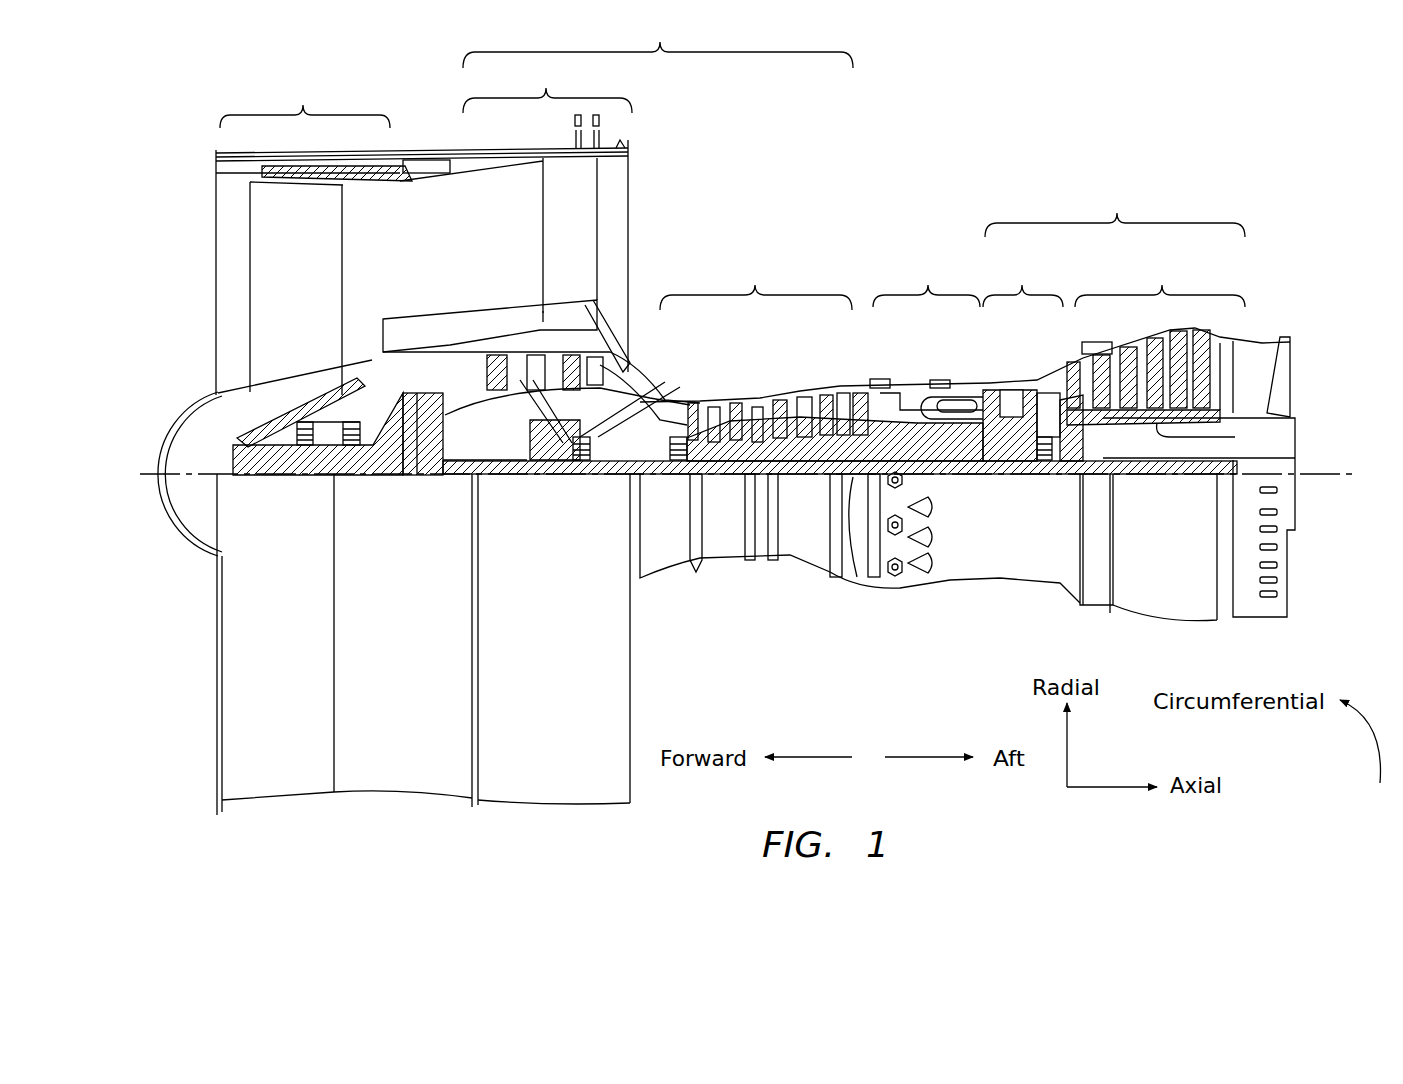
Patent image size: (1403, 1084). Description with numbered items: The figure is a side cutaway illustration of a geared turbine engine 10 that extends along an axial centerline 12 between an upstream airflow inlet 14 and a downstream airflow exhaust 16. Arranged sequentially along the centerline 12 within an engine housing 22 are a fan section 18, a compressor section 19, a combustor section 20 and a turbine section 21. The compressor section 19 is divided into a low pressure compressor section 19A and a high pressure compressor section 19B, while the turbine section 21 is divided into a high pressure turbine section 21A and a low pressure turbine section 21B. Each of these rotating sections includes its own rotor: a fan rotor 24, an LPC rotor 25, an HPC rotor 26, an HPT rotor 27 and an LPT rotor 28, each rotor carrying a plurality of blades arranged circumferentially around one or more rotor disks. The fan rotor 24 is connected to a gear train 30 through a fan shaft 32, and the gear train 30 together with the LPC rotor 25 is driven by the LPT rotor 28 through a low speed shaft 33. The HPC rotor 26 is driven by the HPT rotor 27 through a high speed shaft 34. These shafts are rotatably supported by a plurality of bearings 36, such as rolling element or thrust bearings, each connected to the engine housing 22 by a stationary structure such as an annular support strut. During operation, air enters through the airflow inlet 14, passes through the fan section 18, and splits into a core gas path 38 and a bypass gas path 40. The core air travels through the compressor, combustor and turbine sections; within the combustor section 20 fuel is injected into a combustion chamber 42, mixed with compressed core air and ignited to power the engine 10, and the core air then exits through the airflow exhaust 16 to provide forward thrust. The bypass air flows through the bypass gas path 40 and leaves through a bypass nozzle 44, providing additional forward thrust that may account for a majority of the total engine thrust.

The geared turbine engine 10 is at (183, 130).
The axial centerline 12 is at (1347, 480).
The upstream airflow inlet 14 is at (213, 229).
The downstream airflow exhaust 16 is at (1290, 367).
The fan section 18 is at (305, 101).
The compressor section 19 is at (658, 40).
The low pressure compressor section 19A is at (567, 237).
The high pressure compressor section 19B is at (815, 349).
The combustor section 20 is at (928, 338).
The turbine section 21 is at (1115, 209).
The high pressure turbine section 21A is at (1033, 359).
The low pressure turbine section 21B is at (1178, 341).
The engine housing 22 is at (658, 590).
The fan rotor 24 is at (222, 390).
The LPC rotor 25 is at (535, 425).
The HPC rotor 26 is at (800, 437).
The HPT rotor 27 is at (1003, 478).
The LPT rotor 28 is at (1160, 437).
The gear train 30 is at (423, 477).
The fan shaft 32 is at (287, 467).
The low speed shaft 33 is at (858, 560).
The high speed shaft 34 is at (933, 458).
The bearings 36 is at (318, 467).
The core gas path 38 is at (650, 400).
The bypass gas path 40 is at (447, 247).
The combustion chamber 42 is at (933, 410).
The bypass nozzle 44 is at (640, 213).